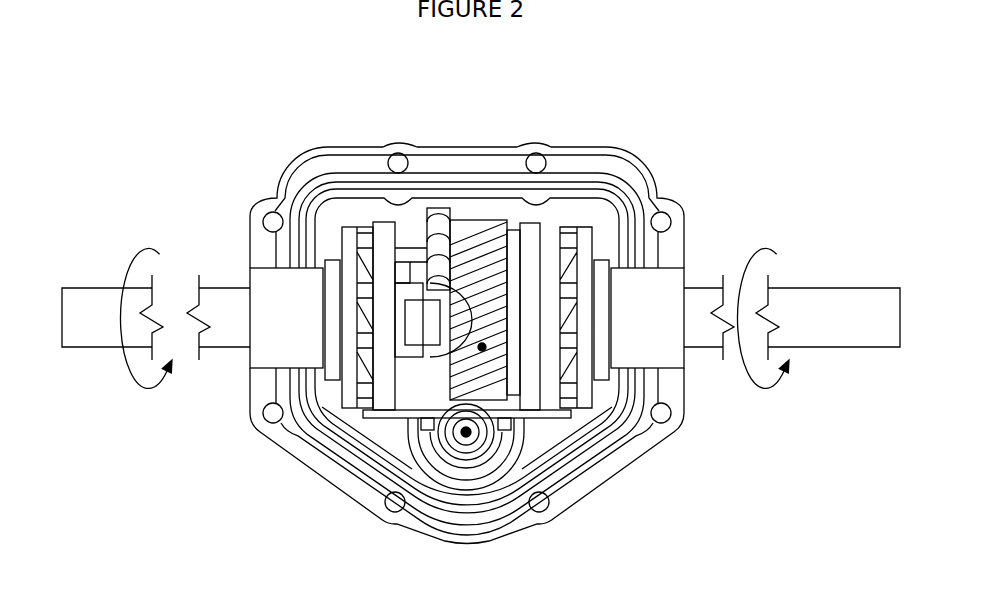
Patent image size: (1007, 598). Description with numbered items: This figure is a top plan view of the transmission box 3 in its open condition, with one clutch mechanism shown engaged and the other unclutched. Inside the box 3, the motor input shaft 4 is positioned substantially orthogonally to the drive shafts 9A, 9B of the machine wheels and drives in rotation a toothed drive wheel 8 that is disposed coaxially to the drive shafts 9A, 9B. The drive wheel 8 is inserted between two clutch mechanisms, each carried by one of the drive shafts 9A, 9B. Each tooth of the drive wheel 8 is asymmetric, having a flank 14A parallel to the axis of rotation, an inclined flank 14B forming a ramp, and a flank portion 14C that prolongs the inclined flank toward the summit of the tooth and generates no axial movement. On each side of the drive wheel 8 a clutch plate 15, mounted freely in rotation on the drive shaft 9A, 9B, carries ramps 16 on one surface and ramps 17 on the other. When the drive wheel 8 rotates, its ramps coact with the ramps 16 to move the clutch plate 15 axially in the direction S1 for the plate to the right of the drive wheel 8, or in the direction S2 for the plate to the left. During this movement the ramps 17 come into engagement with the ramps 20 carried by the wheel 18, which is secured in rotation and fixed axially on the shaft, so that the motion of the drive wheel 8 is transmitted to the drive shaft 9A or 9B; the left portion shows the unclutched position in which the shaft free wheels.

The transmission box 3 is at (637, 156).
The motor input shaft 4 is at (464, 434).
The drive wheel 8 is at (484, 351).
The drive shaft 9A is at (868, 348).
The drive shaft 9B is at (102, 348).
The flank 14A is at (360, 411).
The inclined flank 14B is at (444, 297).
The flank portion 14C is at (428, 283).
The clutch plate 15 is at (663, 395).
The ramps 16 is at (400, 303).
The ramps 17 is at (548, 293).
The wheel 18 is at (597, 265).
The ramps 20 is at (437, 362).
The direction S1 is at (627, 121).
The direction S2 is at (387, 121).